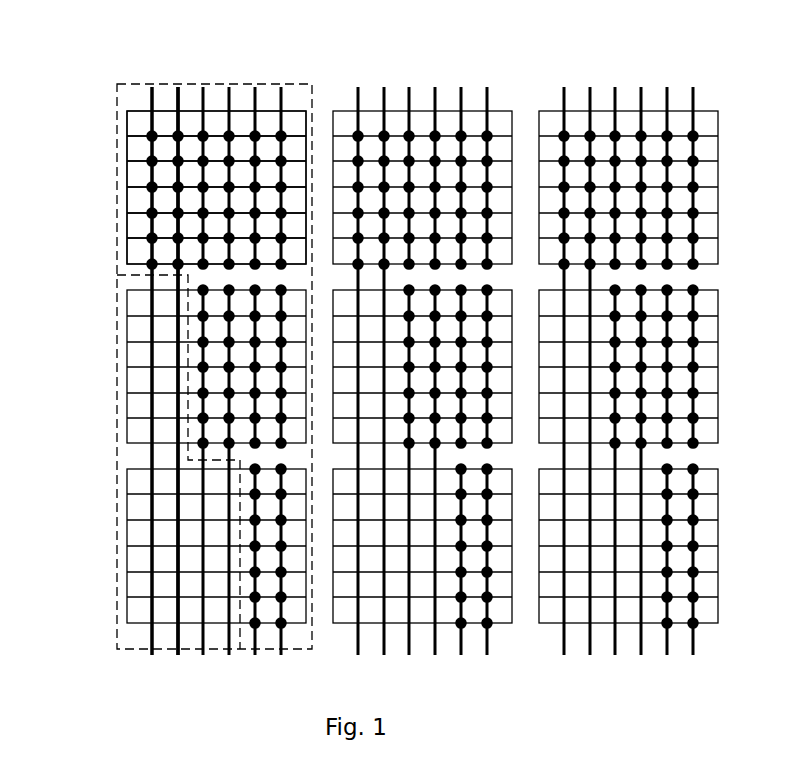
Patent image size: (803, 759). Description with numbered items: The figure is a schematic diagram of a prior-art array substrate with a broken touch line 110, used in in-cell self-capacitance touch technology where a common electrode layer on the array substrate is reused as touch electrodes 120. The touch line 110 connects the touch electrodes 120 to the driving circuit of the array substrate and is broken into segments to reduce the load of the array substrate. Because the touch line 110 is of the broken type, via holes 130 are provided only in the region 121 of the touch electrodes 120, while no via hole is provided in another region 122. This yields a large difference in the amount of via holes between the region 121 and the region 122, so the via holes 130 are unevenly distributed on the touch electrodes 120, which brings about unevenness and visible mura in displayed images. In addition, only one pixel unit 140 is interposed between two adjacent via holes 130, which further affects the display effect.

The touch line 110 is at (283, 95).
The touch electrode 120 is at (127, 120).
The via hole 130 is at (179, 133).
The pixel unit 140 is at (138, 177).
The region 121 is at (302, 638).
The region 122 is at (133, 643).